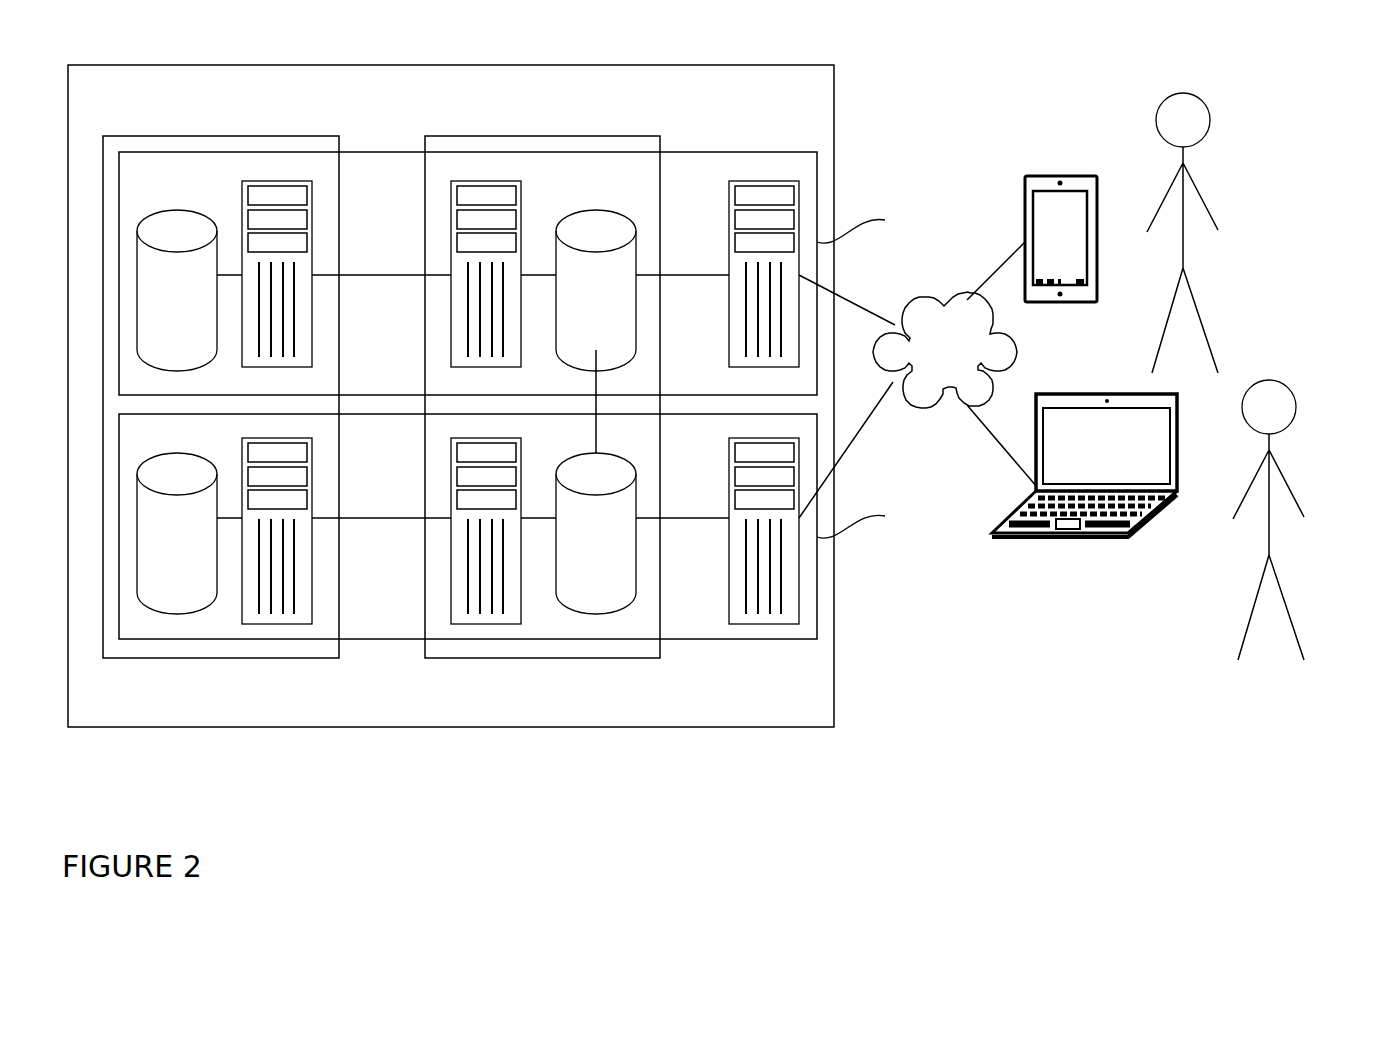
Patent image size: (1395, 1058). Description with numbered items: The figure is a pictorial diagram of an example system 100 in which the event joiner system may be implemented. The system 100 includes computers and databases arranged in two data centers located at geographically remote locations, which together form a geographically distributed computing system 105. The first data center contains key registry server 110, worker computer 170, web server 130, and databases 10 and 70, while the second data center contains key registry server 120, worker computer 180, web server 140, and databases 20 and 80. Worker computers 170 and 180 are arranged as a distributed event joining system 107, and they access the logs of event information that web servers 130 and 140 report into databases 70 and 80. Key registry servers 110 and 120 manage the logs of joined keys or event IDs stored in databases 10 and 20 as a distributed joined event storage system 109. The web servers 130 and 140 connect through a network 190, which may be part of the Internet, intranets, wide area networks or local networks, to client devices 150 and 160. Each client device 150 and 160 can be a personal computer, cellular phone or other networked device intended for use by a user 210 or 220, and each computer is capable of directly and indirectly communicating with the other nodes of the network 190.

The system 100 is at (157, 825).
The geographically distributed computing system 105 is at (834, 173).
The distributed event joining system 107 is at (660, 187).
The distributed joined event storage system 109 is at (339, 186).
The database 10 is at (183, 208).
The database 20 is at (178, 593).
The database 70 is at (597, 208).
The database 80 is at (595, 593).
The key registry server 110 is at (278, 181).
The key registry server 120 is at (277, 623).
The web server 130 is at (765, 181).
The web server 140 is at (765, 623).
The worker computer 170 is at (487, 181).
The worker computer 180 is at (487, 623).
The client device 150 is at (1068, 176).
The client device 160 is at (1060, 538).
The network 190 is at (945, 350).
The user 210 is at (1183, 248).
The user 220 is at (1269, 535).